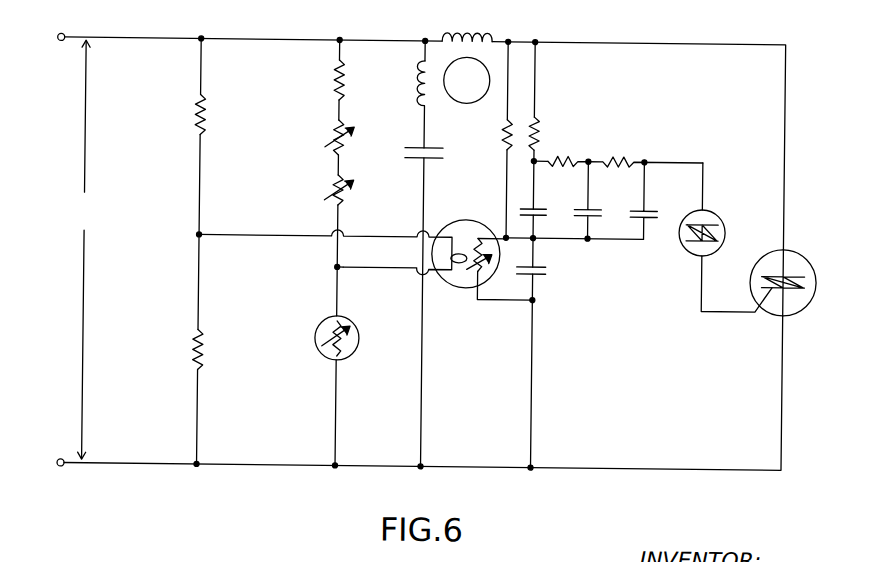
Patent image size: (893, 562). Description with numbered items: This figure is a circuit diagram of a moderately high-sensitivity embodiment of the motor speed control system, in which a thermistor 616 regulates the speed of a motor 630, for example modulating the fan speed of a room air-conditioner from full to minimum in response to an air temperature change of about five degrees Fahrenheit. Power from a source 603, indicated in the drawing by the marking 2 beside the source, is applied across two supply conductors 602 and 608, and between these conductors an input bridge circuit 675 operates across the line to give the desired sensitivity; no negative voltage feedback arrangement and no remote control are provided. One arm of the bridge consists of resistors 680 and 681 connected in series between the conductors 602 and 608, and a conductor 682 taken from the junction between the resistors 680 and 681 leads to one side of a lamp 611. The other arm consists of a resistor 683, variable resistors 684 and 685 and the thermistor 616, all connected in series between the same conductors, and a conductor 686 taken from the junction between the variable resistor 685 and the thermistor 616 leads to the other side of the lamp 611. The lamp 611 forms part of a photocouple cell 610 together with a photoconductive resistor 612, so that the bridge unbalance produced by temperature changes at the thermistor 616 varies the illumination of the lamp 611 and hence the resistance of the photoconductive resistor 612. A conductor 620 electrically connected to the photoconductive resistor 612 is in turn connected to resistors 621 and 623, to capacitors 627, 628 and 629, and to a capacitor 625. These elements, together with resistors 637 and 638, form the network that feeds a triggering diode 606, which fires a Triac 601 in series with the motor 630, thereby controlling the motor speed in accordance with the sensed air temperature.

The Triac 601 is at (800, 253).
The conductor 602 is at (248, 466).
The source 603 is at (84, 236).
The triggering diode 606 is at (720, 221).
The conductor 608 is at (176, 19).
The photocouple cell 610 is at (473, 205).
The lamp 611 is at (453, 266).
The photoconductive resistor 612 is at (476, 277).
The thermistor 616 is at (313, 353).
The conductor 620 is at (566, 240).
The resistor 621 is at (503, 140).
The resistor 623 is at (538, 135).
The capacitor 625 is at (540, 276).
The capacitor 627 is at (555, 193).
The capacitor 628 is at (610, 193).
The capacitor 629 is at (668, 193).
The motor 630 is at (455, 101).
The resistor 637 is at (557, 158).
The resistor 638 is at (625, 158).
The input bridge circuit 675 is at (188, 259).
The resistor 680 is at (203, 117).
The resistor 681 is at (203, 347).
The conductor 682 is at (288, 216).
The resistor 683 is at (343, 90).
The variable resistor 684 is at (343, 148).
The variable resistor 685 is at (343, 205).
The conductor 686 is at (356, 278).
The voltage reference 2 is at (85, 215).